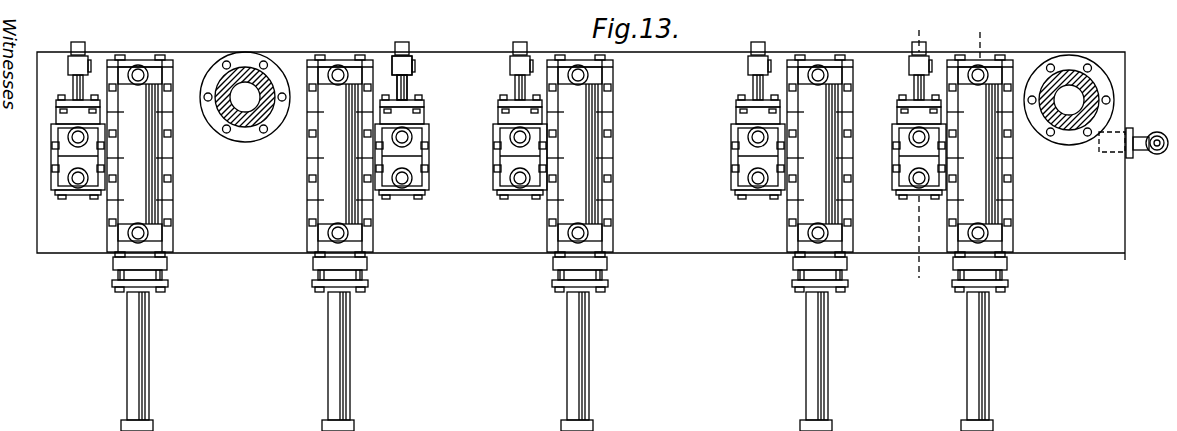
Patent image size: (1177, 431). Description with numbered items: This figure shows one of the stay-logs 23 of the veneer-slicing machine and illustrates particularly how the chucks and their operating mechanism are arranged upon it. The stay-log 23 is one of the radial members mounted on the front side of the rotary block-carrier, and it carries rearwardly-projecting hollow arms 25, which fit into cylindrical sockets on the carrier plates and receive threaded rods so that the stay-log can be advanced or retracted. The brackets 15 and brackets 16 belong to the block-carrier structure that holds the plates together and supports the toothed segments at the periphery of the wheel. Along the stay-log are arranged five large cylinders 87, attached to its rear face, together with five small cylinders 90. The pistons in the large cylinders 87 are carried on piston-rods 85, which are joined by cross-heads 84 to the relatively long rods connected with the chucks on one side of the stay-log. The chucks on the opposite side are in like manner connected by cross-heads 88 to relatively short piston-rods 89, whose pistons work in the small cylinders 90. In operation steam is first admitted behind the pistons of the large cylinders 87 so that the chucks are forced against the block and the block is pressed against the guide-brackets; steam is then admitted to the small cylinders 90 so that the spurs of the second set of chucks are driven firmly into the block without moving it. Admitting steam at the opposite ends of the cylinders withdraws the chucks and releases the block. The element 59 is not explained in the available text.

The brackets 15 is at (993, 35).
The brackets 16 is at (929, 157).
The stay-log 23 is at (581, 156).
The hollow arms 25 is at (240, 75).
The shaft end / hand wheel 59 is at (1157, 154).
The cross-heads 84 is at (352, 425).
The piston-rods 85 is at (344, 355).
The cylinders 87 is at (147, 165).
The cross-heads 88 is at (413, 66).
The piston-rods 89 is at (409, 88).
The cylinders 90 is at (67, 163).